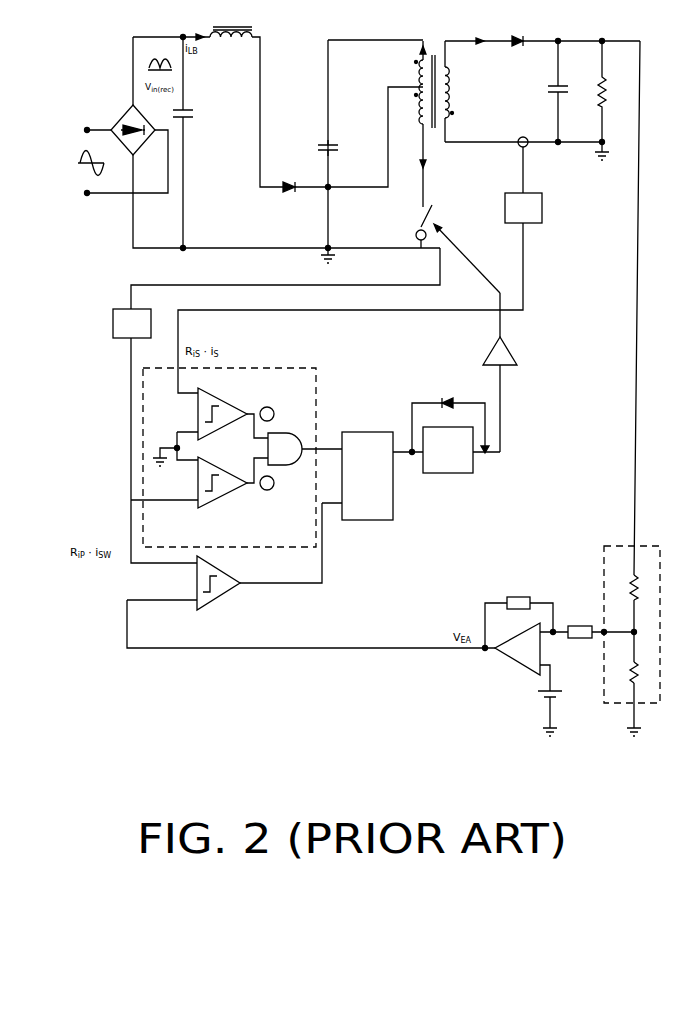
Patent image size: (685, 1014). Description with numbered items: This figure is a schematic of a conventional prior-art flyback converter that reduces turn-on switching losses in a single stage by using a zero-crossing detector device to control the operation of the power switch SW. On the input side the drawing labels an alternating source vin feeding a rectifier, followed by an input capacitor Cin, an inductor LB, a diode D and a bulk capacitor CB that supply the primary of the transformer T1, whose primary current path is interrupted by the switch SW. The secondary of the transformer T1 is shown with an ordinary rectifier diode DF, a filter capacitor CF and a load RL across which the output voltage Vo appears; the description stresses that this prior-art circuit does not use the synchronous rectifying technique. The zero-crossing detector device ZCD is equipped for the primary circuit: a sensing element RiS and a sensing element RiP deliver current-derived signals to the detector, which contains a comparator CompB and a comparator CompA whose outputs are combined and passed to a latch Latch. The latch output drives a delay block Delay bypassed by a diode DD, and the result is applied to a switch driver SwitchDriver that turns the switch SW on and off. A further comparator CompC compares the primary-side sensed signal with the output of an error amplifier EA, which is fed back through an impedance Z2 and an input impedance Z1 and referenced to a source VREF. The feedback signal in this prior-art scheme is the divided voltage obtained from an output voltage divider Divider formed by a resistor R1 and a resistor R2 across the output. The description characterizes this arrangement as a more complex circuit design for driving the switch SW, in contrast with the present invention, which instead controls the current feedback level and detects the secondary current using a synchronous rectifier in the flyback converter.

The AC input source and bridge rectifier vin is at (123, 160).
The boost inductor LB is at (231, 44).
The input capacitor Cin is at (190, 143).
The diode D is at (286, 196).
The bulk capacitor CB is at (325, 188).
The transformer T1 is at (407, 74).
The element SW is at (445, 226).
The output rectifier diode DF is at (499, 51).
The output filter capacitor CF is at (549, 92).
The load resistor RL is at (595, 92).
The output voltage Vo is at (618, 93).
The secondary current sense resistor RiS is at (523, 180).
The primary current sense resistor RiP is at (132, 323).
The zero-crossing detector device ZCD is at (229, 457).
The comparator B CompB is at (240, 411).
The comparator A CompA is at (240, 486).
The latch Latch is at (367, 484).
The delay block Delay is at (442, 450).
The delay diode DD is at (463, 416).
The switch driver SwitchDriver is at (509, 345).
The comparator C CompC is at (240, 586).
The error amplifier EA is at (512, 649).
The feedback impedance Z2 is at (518, 596).
The input impedance Z1 is at (579, 624).
The reference voltage source VREF is at (533, 691).
The output voltage divider Divider is at (632, 624).
The divider resistor R1 is at (624, 587).
The divider resistor R2 is at (624, 672).